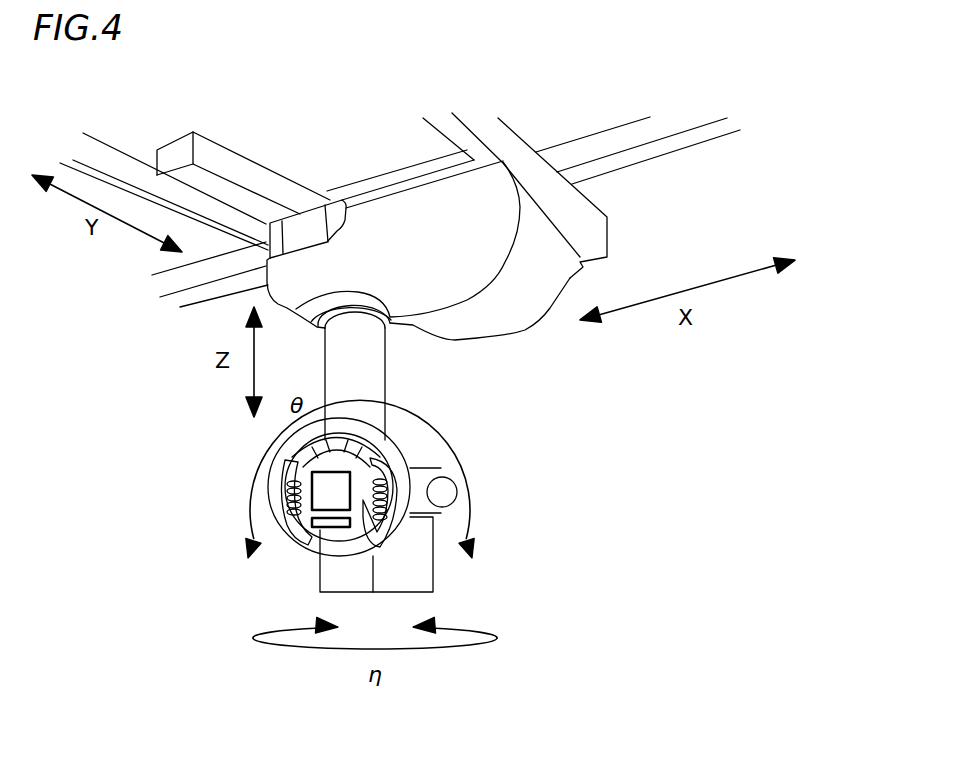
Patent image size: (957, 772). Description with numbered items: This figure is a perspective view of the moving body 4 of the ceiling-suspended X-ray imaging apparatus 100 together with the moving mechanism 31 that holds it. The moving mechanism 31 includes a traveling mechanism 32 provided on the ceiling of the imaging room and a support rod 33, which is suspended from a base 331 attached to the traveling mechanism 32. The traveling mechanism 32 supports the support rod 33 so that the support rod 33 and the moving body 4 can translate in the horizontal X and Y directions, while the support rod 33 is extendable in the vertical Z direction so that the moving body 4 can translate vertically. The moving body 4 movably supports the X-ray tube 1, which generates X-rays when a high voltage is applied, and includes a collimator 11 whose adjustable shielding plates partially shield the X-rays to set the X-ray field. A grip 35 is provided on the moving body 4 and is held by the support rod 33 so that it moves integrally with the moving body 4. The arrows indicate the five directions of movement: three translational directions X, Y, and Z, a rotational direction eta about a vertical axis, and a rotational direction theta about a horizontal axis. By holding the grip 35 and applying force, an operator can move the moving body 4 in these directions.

The X-ray imaging apparatus 100 is at (708, 74).
The traveling mechanism 32 is at (648, 160).
The moving mechanism 31 is at (550, 460).
The base 331 is at (526, 335).
The support rod 33 is at (388, 373).
The grip 35 is at (302, 535).
The X-ray tube 1 is at (449, 488).
The collimator 11 is at (437, 575).
The moving body 4 is at (416, 528).